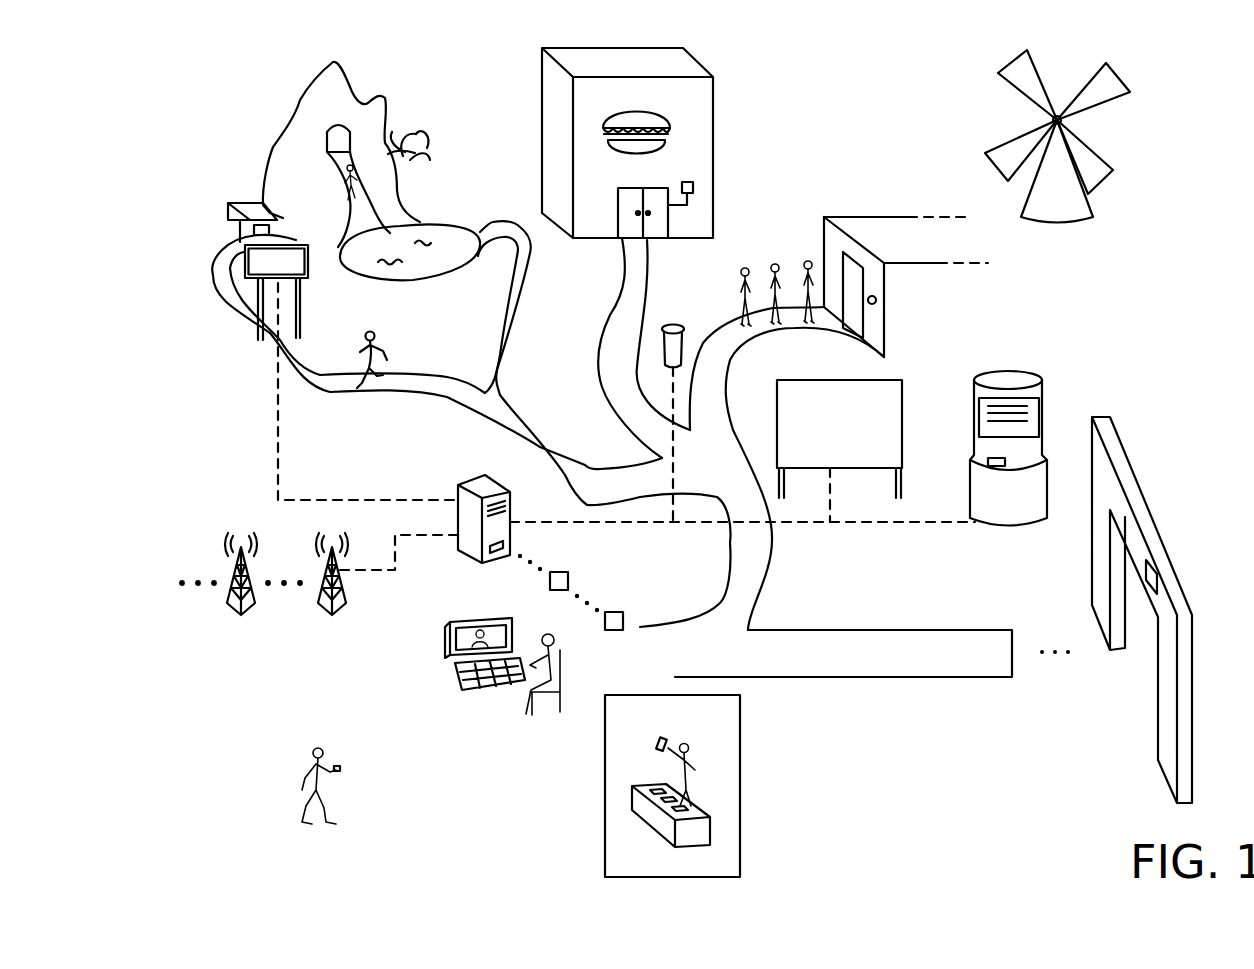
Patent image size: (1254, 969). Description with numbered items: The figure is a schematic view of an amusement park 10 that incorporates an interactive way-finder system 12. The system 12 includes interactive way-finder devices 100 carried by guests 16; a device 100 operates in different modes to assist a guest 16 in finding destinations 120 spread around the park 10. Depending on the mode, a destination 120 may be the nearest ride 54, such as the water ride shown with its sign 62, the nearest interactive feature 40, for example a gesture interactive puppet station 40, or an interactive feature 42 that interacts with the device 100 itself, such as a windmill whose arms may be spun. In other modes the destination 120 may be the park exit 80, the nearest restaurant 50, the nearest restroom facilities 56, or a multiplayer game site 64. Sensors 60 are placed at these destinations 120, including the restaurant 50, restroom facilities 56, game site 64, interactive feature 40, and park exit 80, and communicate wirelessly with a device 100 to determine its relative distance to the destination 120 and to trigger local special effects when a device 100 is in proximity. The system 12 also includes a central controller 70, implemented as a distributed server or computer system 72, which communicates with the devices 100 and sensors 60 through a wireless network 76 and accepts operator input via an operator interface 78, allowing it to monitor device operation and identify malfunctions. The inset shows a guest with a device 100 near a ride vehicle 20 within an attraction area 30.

The amusement park 10 is at (172, 410).
The interactive way-finder system 12 is at (258, 510).
The guest 16 is at (323, 757).
The ride vehicle 20 is at (650, 790).
The attraction area 30 is at (742, 788).
The interactive feature 40 is at (1010, 371).
The interactive feature 42 is at (676, 325).
The restaurant 50 is at (700, 66).
The ride 54 is at (298, 123).
The restroom facilities 56 is at (838, 215).
The sensor 60 is at (260, 210).
The display sign 62 is at (277, 243).
The multiplayer game site 64 is at (902, 412).
The central controller 70 is at (468, 463).
The distributed server or computer system 72 is at (583, 565).
The wireless network 76 is at (246, 612).
The operator interface 78 is at (496, 712).
The park exit 80 is at (1130, 527).
The interactive way-finder device 100 is at (337, 772).
The destination 120 is at (337, 80).